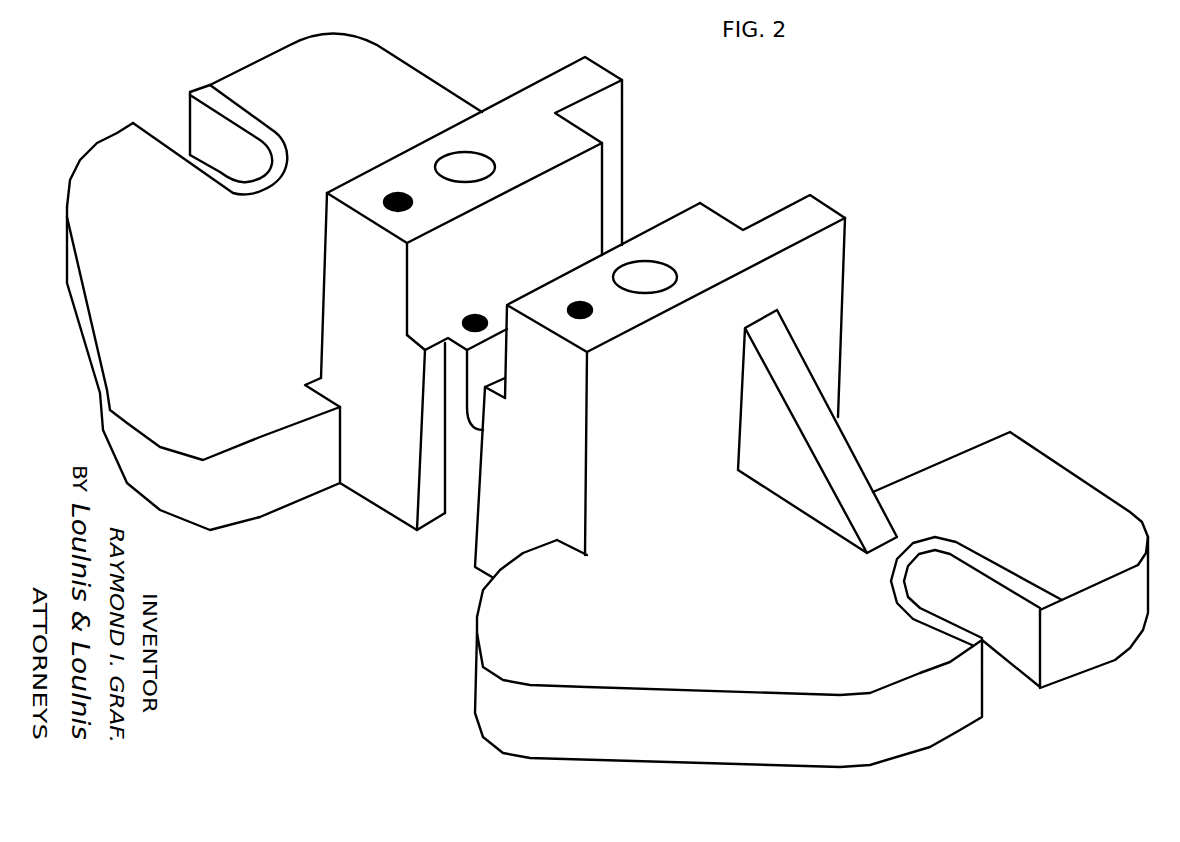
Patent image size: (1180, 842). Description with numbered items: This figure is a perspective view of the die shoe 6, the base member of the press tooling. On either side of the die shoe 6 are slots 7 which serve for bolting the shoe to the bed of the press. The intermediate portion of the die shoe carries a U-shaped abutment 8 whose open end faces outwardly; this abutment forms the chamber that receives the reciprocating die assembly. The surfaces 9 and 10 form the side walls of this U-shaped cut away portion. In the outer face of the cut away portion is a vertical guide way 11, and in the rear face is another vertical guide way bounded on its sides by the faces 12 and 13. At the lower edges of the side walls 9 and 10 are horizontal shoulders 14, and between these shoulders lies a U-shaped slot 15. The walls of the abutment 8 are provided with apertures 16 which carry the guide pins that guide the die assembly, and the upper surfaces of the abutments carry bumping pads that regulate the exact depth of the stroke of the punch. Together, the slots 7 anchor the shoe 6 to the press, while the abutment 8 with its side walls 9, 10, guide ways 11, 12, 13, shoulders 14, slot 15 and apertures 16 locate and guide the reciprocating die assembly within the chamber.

The die shoe 6 is at (497, 637).
The slots 7 is at (227, 142).
The U-shaped abutment 8 is at (323, 273).
The side wall surface 9 is at (427, 263).
The side wall surface 10 is at (507, 355).
The vertical guide way 11 is at (458, 517).
The guide way face 12 is at (610, 118).
The guide way face 13 is at (766, 214).
The horizontal shoulders 14 is at (425, 337).
The U-shaped slot 15 is at (472, 408).
The apertures 16 is at (473, 162).